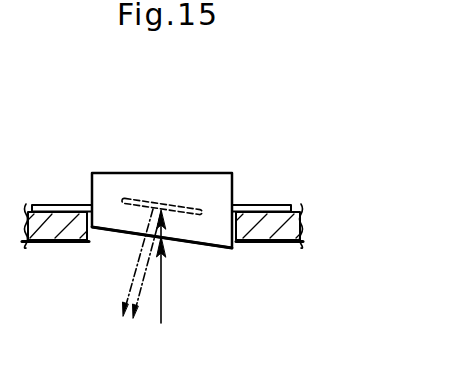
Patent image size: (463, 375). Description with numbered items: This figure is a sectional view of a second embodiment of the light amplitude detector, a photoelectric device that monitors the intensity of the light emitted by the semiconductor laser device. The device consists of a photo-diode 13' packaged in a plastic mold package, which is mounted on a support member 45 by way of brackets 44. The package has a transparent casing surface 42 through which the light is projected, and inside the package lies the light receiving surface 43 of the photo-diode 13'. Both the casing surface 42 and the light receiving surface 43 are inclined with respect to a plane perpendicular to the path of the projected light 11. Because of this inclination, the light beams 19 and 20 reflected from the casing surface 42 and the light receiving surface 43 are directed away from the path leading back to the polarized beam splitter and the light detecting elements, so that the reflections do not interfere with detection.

The photo-diode 13' is at (179, 185).
The transparent casing surface 42 is at (212, 248).
The light receiving surface 43 is at (138, 207).
The projected light 11 is at (165, 307).
The reflected light beam 19 is at (143, 291).
The reflected light beam 20 is at (126, 294).
The brackets 44 is at (60, 204).
The support member 45 is at (287, 243).